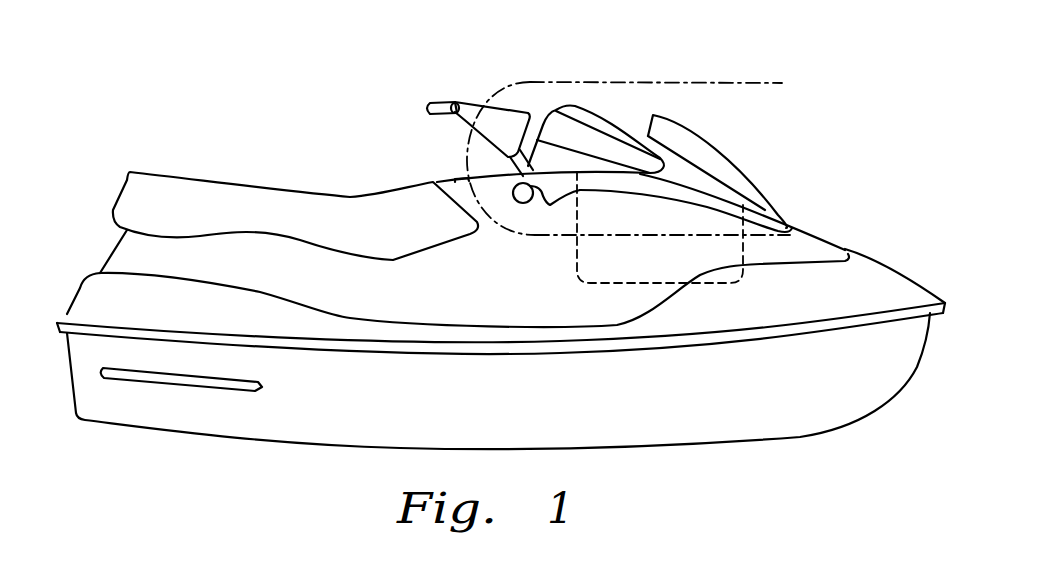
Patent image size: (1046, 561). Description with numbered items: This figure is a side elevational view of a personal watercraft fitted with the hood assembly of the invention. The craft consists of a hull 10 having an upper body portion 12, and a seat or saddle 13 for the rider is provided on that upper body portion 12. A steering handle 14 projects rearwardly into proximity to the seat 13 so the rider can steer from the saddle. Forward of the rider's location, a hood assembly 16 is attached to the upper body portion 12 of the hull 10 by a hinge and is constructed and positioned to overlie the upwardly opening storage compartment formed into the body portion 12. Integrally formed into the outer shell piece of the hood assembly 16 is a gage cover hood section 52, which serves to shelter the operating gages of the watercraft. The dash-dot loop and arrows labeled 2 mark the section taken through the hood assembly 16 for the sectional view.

The hull 10 is at (54, 300).
The upper body portion 12 is at (890, 267).
The seat 13 is at (233, 183).
The steering handle 14 is at (463, 103).
The hood assembly 16 is at (620, 115).
The gage cover hood section 52 is at (723, 150).
The section line for FIG. 2 is at (782, 83).